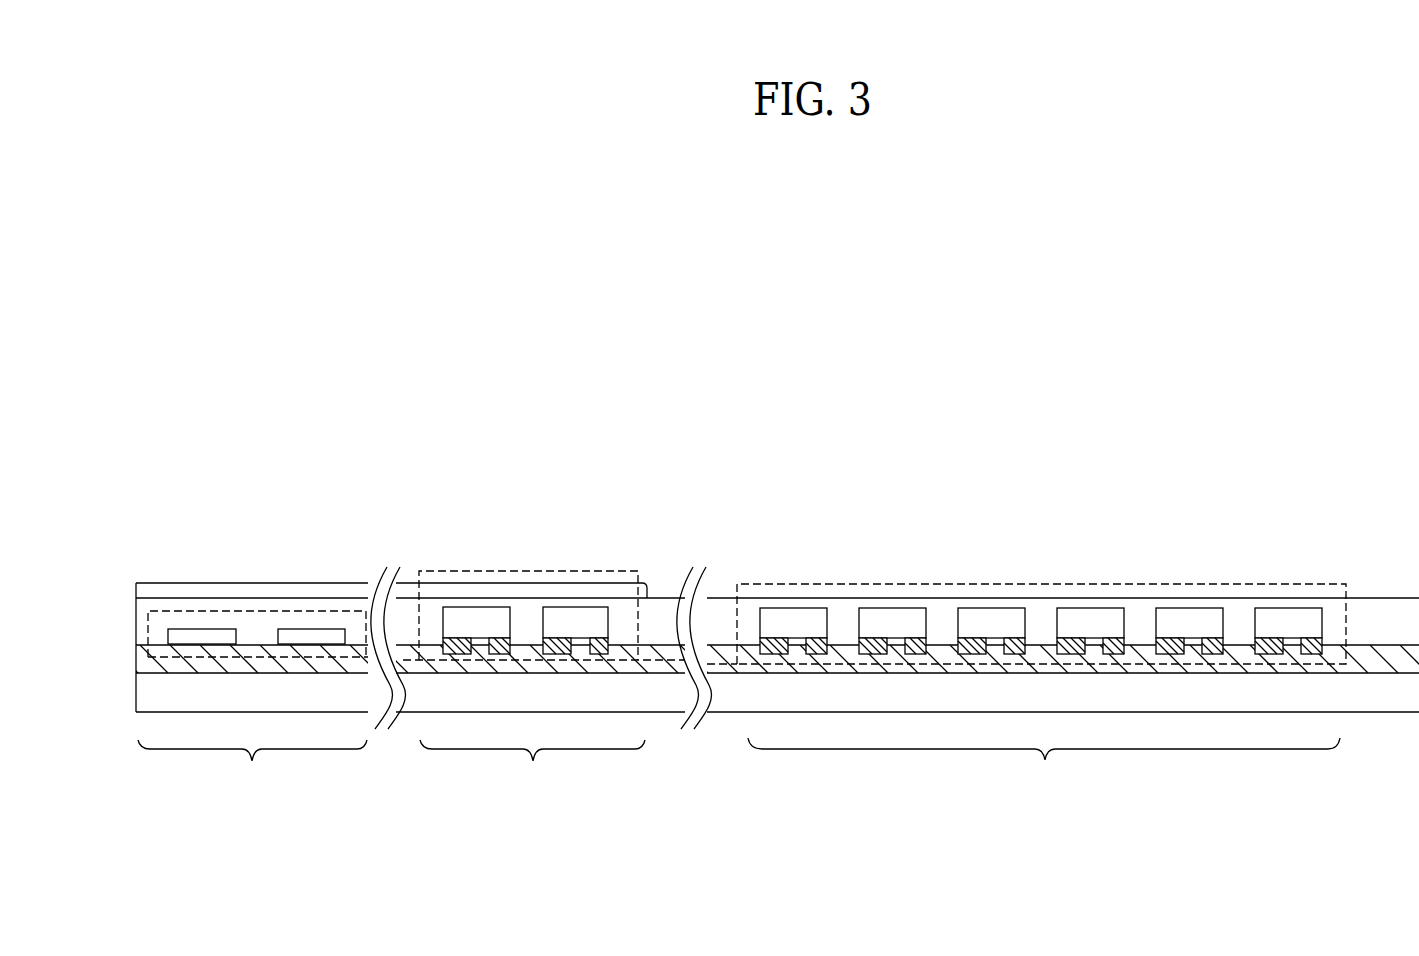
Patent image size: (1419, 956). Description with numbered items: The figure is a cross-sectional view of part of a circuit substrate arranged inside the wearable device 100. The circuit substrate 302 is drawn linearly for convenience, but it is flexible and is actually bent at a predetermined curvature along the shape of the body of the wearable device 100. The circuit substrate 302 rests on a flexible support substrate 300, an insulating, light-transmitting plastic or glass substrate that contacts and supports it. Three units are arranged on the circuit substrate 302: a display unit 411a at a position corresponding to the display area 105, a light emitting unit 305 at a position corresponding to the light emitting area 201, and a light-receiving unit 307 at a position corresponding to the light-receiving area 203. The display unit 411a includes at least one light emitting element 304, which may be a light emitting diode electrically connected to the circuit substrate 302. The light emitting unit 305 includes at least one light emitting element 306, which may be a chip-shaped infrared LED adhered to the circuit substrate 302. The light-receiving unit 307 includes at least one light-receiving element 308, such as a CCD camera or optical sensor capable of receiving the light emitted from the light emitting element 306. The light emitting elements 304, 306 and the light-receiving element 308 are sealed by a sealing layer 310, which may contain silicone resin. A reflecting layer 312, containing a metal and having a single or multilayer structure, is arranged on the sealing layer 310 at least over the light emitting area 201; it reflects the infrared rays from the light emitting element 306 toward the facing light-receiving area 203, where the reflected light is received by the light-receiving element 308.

The wearable device 100 is at (423, 264).
The display area 105 is at (1044, 766).
The light emitting area 201 is at (532, 765).
The light-receiving area 203 is at (252, 765).
The support substrate 300 is at (135, 693).
The circuit substrate 302 is at (135, 656).
The light emitting element 304 is at (1092, 608).
The light emitting unit 305 is at (502, 571).
The light emitting element 306 is at (578, 607).
The light-receiving unit 307 is at (255, 610).
The light-receiving element 308 is at (323, 628).
The sealing layer 310 is at (135, 617).
The reflecting layer 312 is at (135, 588).
The display unit 411a is at (1240, 584).